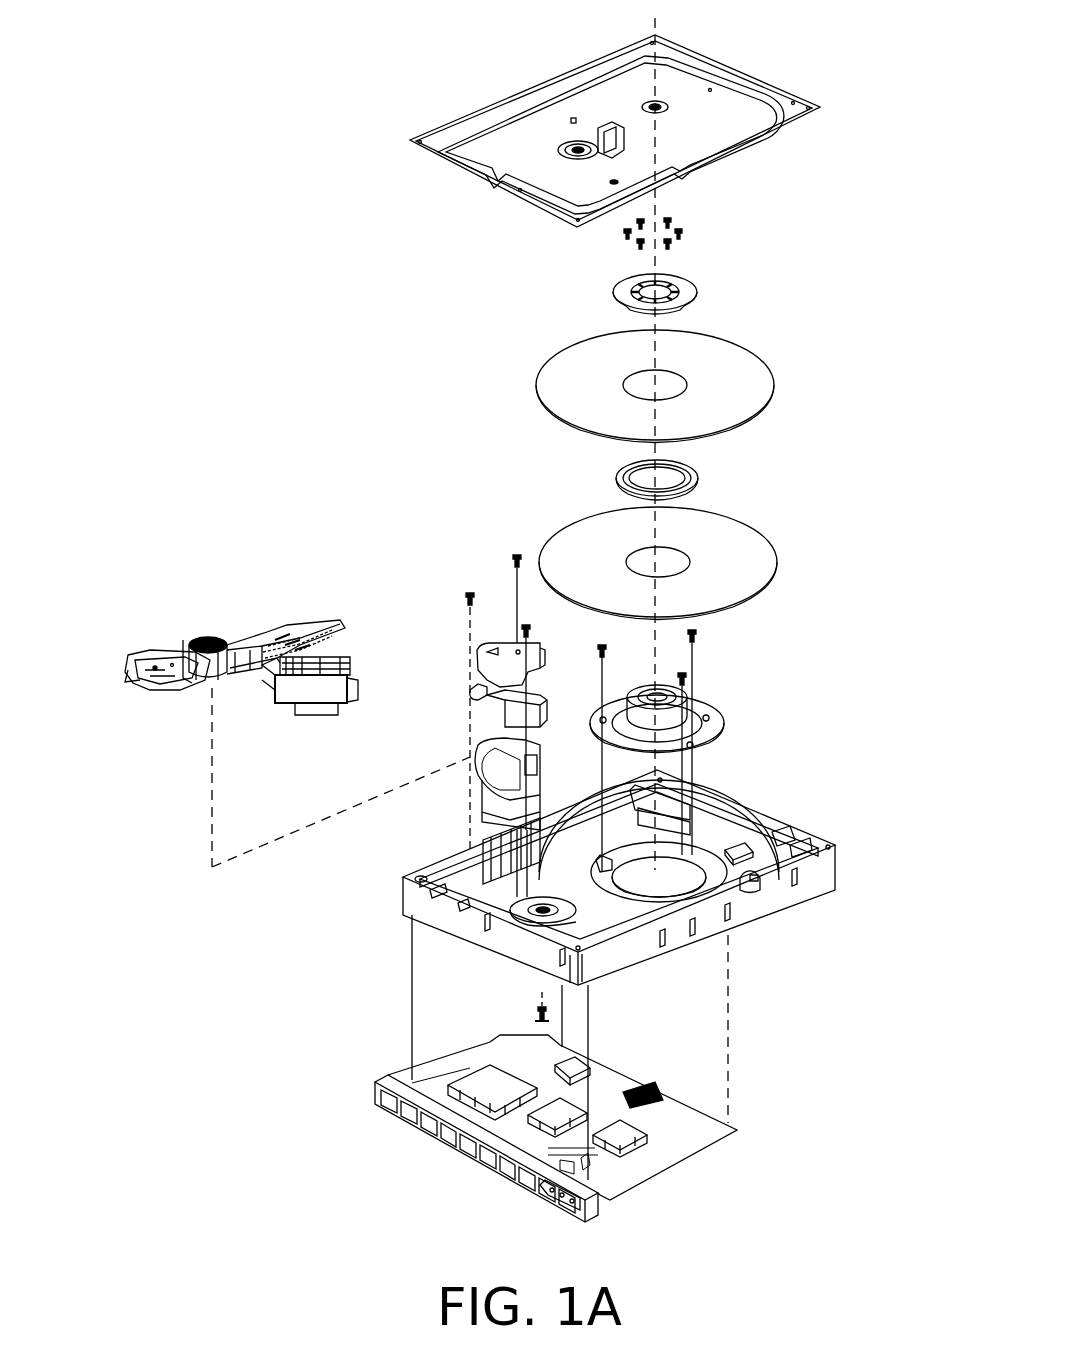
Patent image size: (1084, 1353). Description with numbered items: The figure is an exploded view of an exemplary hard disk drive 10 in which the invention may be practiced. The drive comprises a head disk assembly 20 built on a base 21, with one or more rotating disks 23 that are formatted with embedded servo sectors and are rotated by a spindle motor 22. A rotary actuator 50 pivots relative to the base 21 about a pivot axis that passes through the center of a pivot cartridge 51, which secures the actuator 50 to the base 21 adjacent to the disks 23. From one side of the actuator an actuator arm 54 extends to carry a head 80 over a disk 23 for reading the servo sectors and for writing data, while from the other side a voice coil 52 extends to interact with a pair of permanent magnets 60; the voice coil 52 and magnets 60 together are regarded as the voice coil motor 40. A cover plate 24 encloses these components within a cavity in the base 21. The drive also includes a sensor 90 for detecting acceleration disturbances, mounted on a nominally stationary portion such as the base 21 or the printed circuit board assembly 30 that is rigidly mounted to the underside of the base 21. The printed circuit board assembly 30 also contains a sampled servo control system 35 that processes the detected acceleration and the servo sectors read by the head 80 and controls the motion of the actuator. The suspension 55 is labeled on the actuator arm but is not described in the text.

The hard disk drive 10 is at (275, 143).
The head disk assembly 20 is at (870, 10).
The base 21 is at (818, 836).
The spindle motor 22 is at (712, 712).
The rotating disks 23 is at (760, 360).
The cover plate 24 is at (790, 88).
The Printed Circuit Board Assembly 30 is at (630, 1177).
The sampled servo control system 35 is at (620, 1143).
The voice coil motor 40 is at (103, 552).
The rotary actuator 50 is at (205, 600).
The pivot cartridge 51 is at (205, 632).
The voice coil 52 is at (137, 658).
The actuator arm 54 is at (233, 637).
The suspension 55 is at (270, 637).
The permanent magnets 60 is at (472, 757).
The head 80 is at (306, 632).
The sensor 90 is at (740, 835).